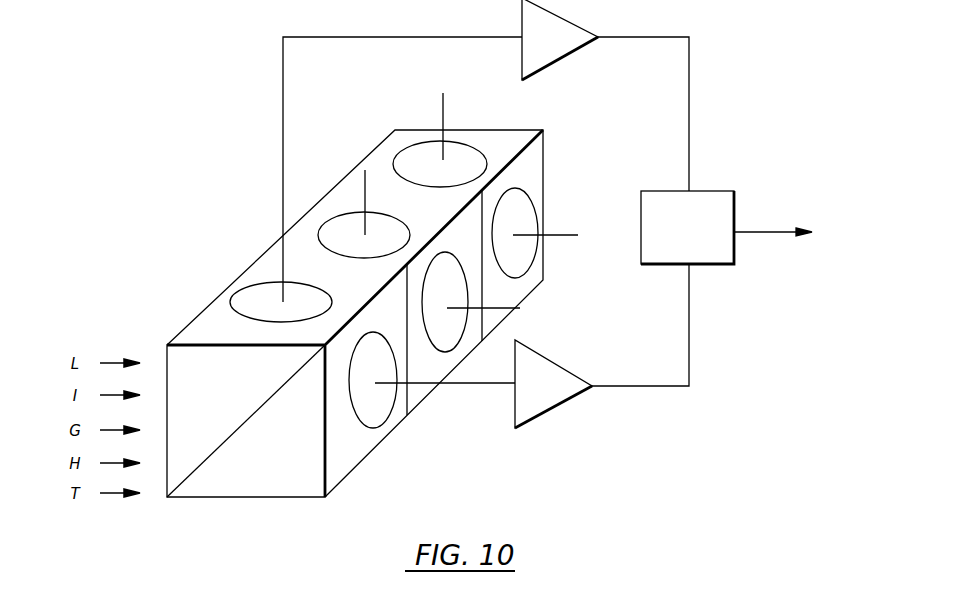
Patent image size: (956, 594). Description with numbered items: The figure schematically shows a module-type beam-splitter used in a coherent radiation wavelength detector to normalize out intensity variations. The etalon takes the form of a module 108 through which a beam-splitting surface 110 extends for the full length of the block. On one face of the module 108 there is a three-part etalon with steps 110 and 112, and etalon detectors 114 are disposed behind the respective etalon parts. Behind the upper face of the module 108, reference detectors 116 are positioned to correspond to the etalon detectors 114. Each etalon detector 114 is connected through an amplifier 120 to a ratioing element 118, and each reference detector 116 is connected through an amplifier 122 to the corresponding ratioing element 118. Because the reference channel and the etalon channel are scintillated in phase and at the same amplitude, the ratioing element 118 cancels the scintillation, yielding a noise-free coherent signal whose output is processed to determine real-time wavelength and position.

The module 108 is at (270, 486).
The beam-splitting surface 110 is at (237, 425).
The etalon step 112 is at (487, 320).
The etalon detectors 114 is at (380, 350).
The reference detectors 116 is at (317, 300).
The ratioing element 118 is at (712, 265).
The amplifier 120 is at (562, 410).
The amplifier 122 is at (576, 54).